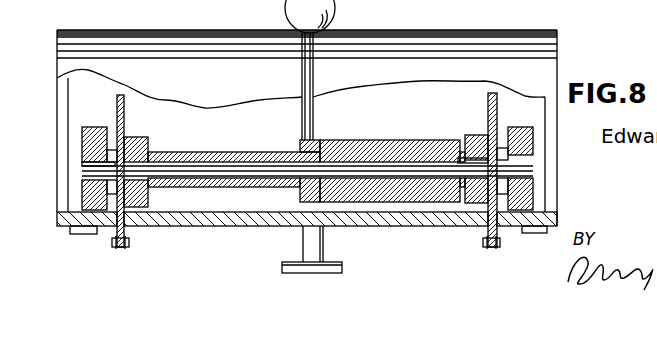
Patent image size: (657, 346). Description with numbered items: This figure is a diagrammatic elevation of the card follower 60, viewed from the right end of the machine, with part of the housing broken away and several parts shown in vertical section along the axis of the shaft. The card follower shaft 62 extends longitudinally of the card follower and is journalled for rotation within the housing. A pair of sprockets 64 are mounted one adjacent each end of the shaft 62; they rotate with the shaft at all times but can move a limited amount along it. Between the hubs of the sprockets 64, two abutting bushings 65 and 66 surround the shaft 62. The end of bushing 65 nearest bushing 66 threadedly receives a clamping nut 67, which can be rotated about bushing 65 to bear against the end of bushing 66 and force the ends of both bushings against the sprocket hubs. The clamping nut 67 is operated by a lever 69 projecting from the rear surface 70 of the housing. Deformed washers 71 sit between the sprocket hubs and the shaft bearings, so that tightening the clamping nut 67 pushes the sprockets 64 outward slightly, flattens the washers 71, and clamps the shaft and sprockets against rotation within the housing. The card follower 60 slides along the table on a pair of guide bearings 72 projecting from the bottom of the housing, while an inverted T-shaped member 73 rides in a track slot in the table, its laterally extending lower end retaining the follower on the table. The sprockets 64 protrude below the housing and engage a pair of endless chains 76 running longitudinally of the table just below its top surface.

The card follower 60 is at (572, 76).
The card follower shaft 62 is at (380, 190).
The sprockets 64 is at (124, 118).
The bushing 65 is at (248, 152).
The bushing 66 is at (347, 141).
The clamping nut 67 is at (293, 207).
The lever 69 is at (313, 50).
The rear surface 70 is at (406, 42).
The deformed washers 71 is at (113, 190).
The guide bearings 72 is at (78, 234).
The inverted T-shaped member 73 is at (303, 265).
The endless chains 76 is at (128, 247).